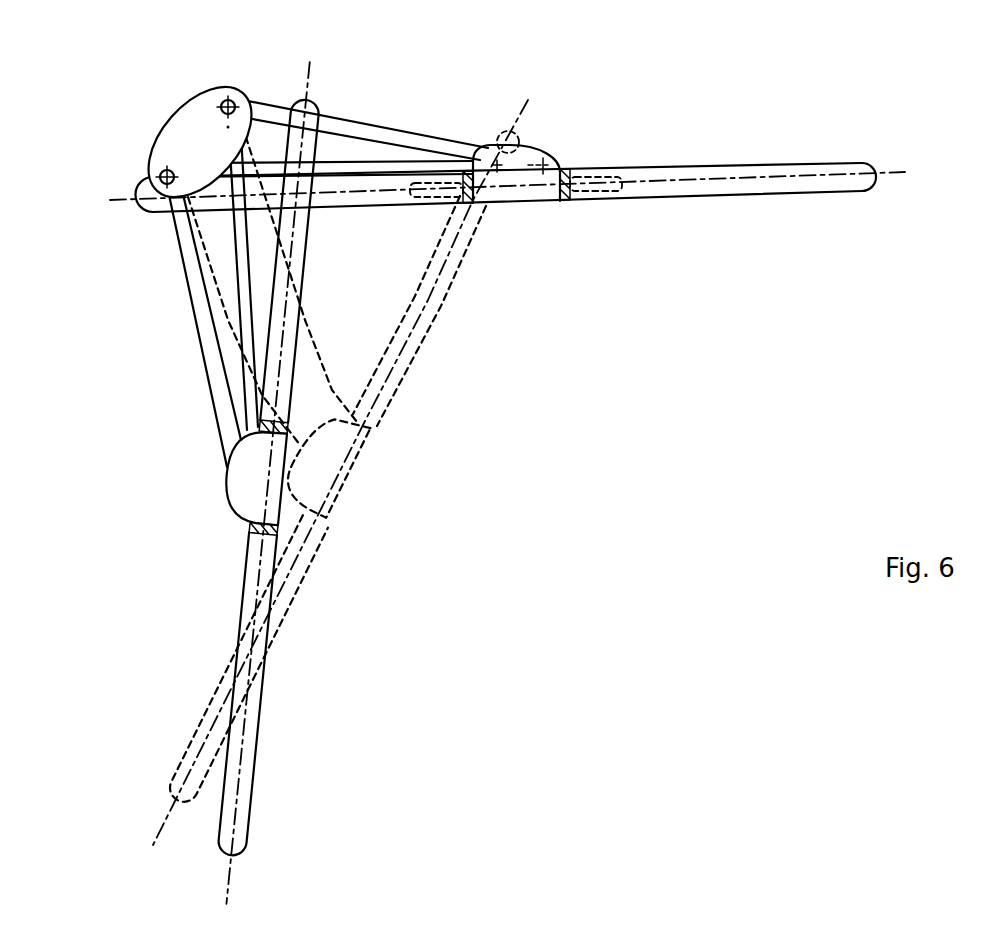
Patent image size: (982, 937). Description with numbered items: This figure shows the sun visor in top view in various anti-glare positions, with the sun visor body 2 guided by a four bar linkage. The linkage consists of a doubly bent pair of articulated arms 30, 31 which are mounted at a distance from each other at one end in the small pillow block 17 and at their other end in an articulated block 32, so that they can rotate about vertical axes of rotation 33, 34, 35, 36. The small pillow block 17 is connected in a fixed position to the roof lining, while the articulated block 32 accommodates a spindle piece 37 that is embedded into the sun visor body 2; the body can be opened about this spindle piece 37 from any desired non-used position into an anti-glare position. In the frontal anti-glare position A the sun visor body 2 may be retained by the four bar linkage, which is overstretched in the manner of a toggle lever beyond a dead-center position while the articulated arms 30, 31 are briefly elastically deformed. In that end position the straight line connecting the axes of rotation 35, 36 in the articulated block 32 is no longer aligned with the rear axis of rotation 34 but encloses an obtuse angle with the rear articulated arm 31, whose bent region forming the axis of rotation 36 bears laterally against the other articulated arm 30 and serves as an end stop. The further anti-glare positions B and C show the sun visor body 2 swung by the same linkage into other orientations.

The sun visor body 2 is at (852, 188).
The small pillow block 17 is at (193, 132).
The articulated arm 30 is at (390, 132).
The articulated arm 31 is at (387, 178).
The articulated block 32 is at (536, 202).
The axis of rotation 33 is at (236, 98).
The axis of rotation 34 is at (158, 168).
The axis of rotation 35 is at (547, 160).
The axis of rotation 36 is at (493, 143).
The spindle piece 37 is at (600, 196).
The frontal anti-glare position A is at (728, 192).
The anti-glare position B is at (257, 733).
The anti-glare position C is at (413, 360).